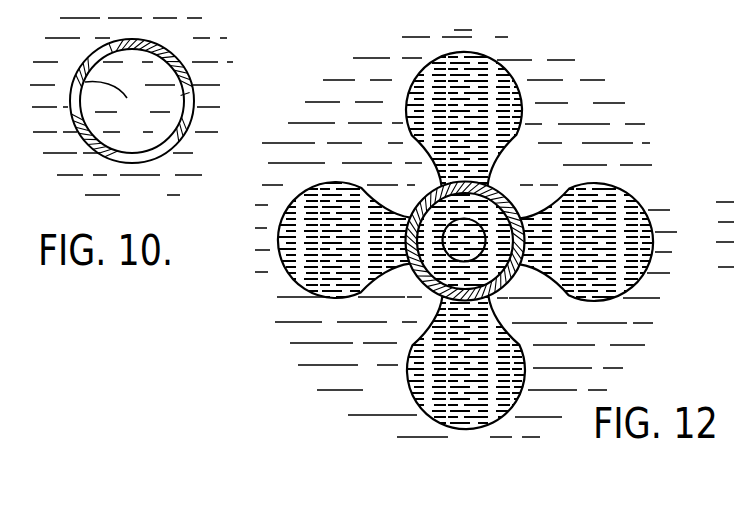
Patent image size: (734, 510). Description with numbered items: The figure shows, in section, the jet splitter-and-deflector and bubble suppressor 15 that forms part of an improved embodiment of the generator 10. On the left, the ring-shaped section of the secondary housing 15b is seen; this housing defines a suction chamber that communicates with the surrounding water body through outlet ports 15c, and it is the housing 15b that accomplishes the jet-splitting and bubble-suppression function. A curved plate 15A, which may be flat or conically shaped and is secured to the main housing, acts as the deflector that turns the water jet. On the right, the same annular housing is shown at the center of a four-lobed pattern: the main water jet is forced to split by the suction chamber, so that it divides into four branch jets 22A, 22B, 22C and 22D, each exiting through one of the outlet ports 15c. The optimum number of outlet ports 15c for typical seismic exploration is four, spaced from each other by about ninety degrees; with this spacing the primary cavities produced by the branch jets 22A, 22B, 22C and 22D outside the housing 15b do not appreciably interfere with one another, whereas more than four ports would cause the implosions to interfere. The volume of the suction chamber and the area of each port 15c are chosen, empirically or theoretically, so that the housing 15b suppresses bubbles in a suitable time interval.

In FIG. 12, the generator 10 is at (508, 185).
In FIG. 10, the jet splitter-and-deflector and bubble suppressor 15 is at (184, 139).
In FIG. 10, the plate 15A is at (85, 82).
In FIG. 10, the secondary housing 15b is at (172, 57).
In FIG. 10, the outlet port 15c is at (193, 100).
In FIG. 12, the branch jet 22A is at (620, 213).
In FIG. 12, the branch jet 22B is at (437, 375).
In FIG. 12, the branch jet 22C is at (307, 258).
In FIG. 12, the branch jet 22D is at (485, 80).